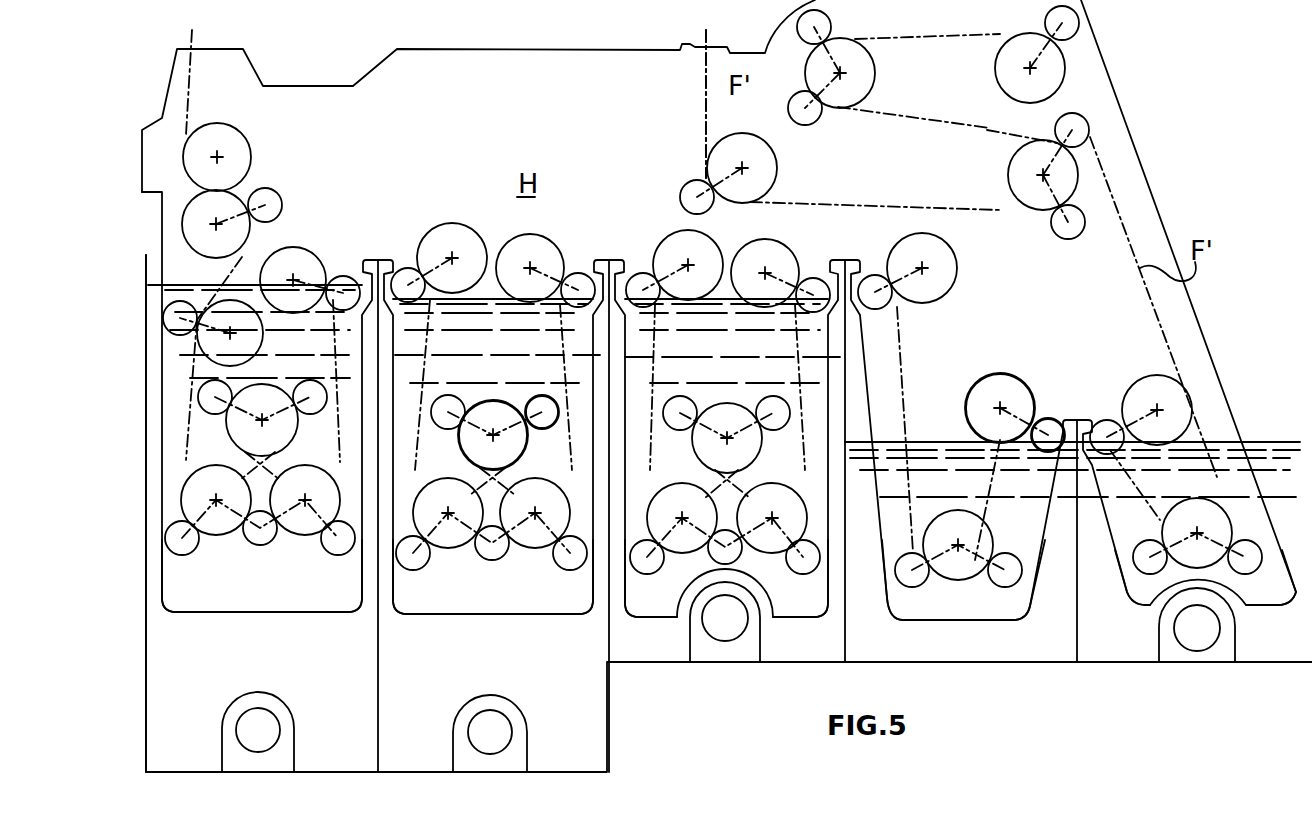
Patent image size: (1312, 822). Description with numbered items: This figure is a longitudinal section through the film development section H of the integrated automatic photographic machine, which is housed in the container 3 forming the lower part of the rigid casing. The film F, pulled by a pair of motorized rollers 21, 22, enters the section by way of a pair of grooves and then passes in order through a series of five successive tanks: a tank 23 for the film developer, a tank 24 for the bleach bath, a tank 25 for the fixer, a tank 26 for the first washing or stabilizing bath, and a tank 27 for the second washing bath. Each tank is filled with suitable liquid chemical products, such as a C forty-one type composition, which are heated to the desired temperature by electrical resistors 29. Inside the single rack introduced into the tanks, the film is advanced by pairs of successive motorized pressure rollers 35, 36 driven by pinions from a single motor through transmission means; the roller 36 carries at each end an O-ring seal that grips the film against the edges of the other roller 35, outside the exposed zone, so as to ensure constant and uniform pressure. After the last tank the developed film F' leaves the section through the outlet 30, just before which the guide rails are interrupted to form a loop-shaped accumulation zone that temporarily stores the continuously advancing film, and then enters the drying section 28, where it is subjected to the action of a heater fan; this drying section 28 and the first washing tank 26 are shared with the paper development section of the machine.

The container 3 is at (146, 296).
The motorized roller 21 is at (248, 156).
The motorized roller 22 is at (242, 232).
The film developer tank 23 is at (262, 597).
The bleach bath tank 24 is at (493, 597).
The fixer tank 25 is at (728, 596).
The first washing bath tank 26 is at (963, 598).
The second washing bath tank 27 is at (1208, 608).
The drying section 28 is at (963, 104).
The electrical resistor 29 is at (270, 731).
The outlet 30 is at (692, 50).
The motorized pressure roller 35 is at (495, 405).
The motorized pressure roller 36 is at (545, 405).